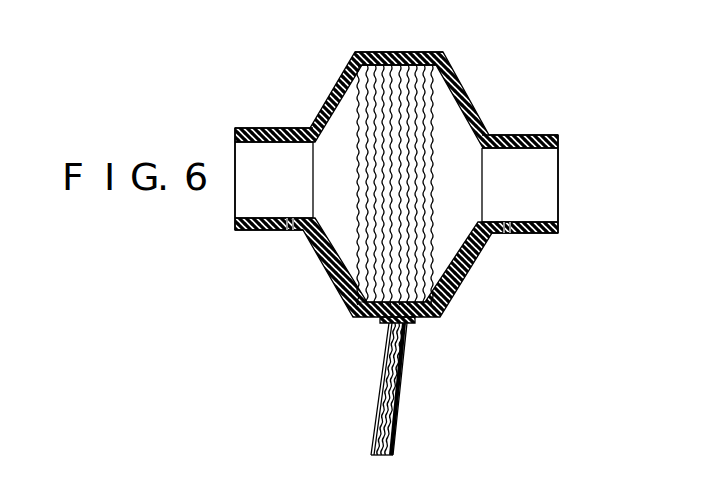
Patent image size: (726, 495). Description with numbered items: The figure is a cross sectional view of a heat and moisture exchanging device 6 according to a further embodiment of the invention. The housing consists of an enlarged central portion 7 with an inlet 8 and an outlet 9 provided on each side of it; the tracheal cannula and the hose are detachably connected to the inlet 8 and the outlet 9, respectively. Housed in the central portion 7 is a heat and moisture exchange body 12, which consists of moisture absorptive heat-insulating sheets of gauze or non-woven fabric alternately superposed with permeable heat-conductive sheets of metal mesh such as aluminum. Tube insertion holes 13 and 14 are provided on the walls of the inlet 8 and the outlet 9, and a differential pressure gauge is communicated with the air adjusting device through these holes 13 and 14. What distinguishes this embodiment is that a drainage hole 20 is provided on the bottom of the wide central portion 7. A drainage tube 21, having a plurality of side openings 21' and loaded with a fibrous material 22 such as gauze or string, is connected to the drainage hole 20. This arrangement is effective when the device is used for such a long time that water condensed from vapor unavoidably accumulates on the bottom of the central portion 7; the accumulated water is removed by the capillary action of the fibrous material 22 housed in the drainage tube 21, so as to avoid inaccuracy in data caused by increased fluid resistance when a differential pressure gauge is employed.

The housing body 6 is at (318, 109).
The enlarged central portion 7 is at (410, 52).
The inlet 8 is at (246, 231).
The outlet 9 is at (551, 234).
The heat and moisture exchange body 12 is at (421, 323).
The tube insertion hole 13 is at (506, 233).
The tube insertion hole 14 is at (290, 230).
The drainage hole 20 is at (387, 324).
The drainage tube 21 is at (331, 389).
The side openings 21' is at (385, 389).
The fibrous material 22 is at (408, 370).